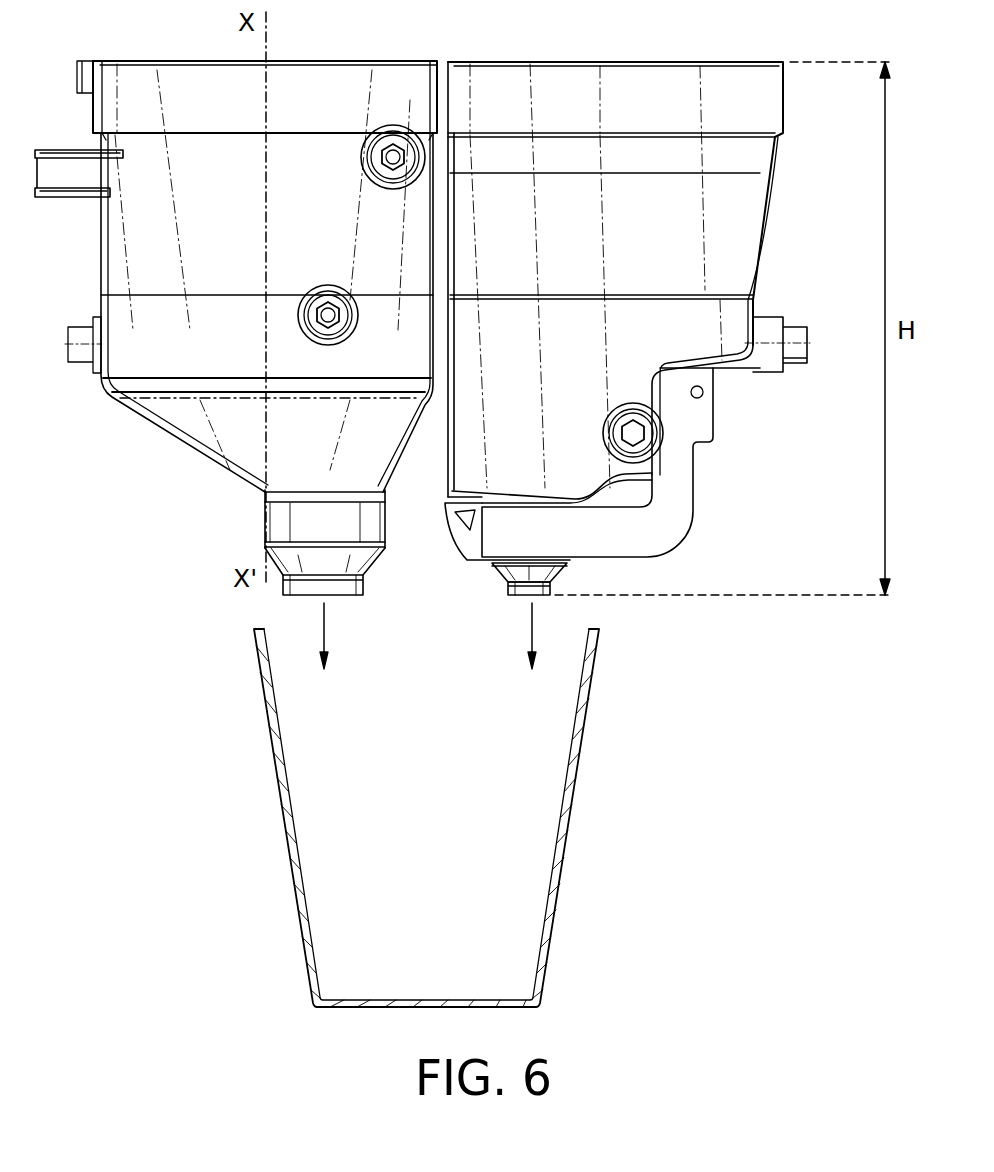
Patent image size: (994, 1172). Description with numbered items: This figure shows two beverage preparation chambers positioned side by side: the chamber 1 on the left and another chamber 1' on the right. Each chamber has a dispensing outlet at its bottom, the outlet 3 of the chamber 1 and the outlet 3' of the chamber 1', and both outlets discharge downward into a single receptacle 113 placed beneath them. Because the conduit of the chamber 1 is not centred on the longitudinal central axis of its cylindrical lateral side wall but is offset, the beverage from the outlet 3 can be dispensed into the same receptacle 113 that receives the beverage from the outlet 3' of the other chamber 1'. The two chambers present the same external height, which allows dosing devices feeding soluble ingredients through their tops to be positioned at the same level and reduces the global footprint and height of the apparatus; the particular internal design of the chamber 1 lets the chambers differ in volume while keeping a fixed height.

The chamber 1 is at (236, 276).
The another chamber 1' is at (635, 311).
The outlet 3 is at (303, 557).
The outlet 3' is at (566, 599).
The receptacle 113 is at (568, 815).